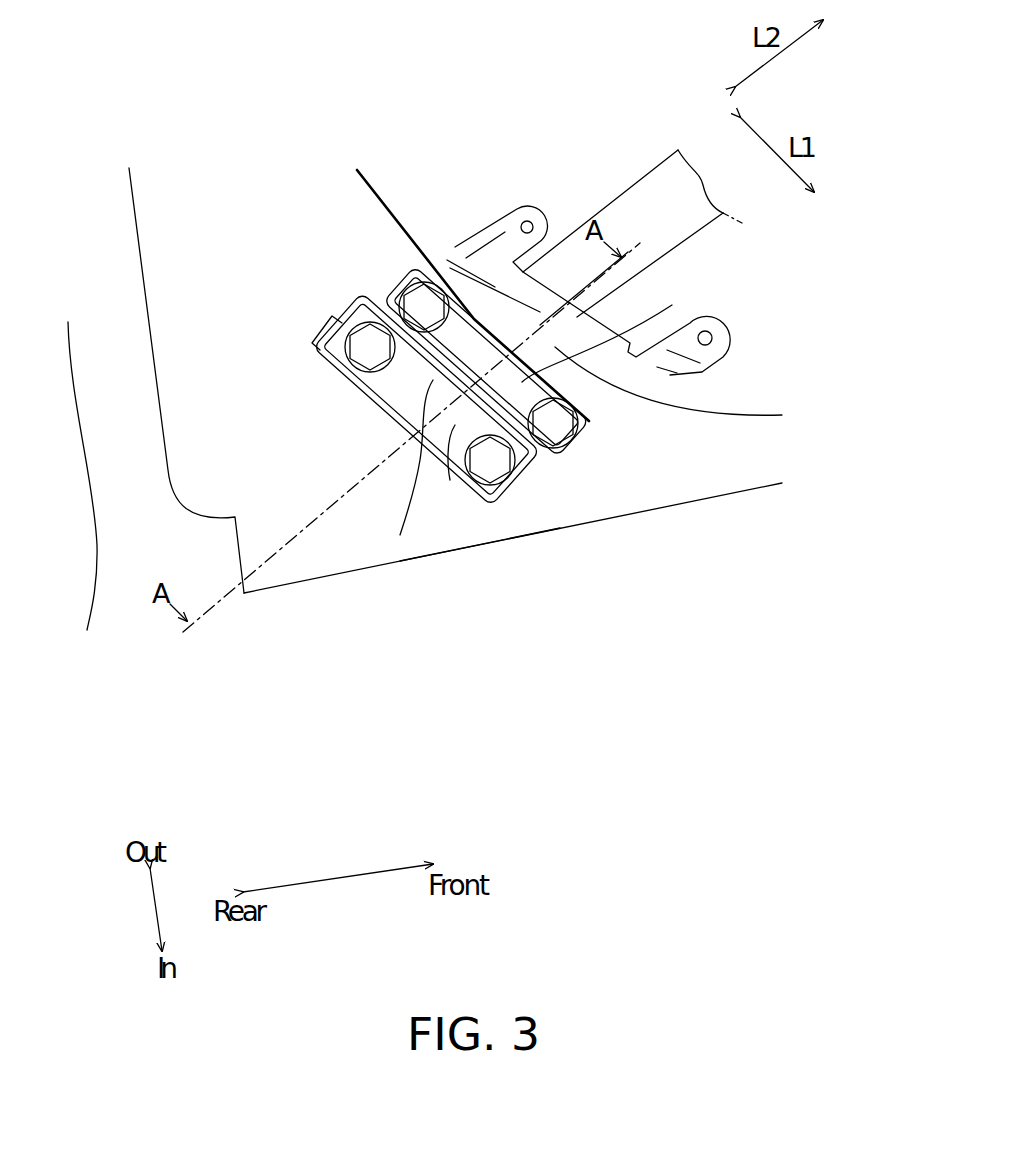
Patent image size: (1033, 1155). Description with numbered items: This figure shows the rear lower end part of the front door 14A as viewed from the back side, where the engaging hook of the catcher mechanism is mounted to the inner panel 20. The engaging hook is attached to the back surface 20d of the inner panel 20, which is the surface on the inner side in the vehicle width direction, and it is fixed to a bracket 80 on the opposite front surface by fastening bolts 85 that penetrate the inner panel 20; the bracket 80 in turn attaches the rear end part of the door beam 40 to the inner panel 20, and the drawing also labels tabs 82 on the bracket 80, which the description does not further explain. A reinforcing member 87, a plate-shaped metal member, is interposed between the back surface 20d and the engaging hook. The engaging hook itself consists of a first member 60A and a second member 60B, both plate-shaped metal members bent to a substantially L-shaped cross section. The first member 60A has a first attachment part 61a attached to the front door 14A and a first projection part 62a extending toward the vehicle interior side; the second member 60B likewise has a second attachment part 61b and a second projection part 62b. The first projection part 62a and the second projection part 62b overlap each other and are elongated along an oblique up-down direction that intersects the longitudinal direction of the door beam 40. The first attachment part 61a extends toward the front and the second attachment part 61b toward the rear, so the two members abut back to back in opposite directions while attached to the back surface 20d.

The front door 14A is at (273, 665).
The inner panel 20 is at (692, 462).
The back surface 20d is at (605, 492).
The door beam 40 is at (622, 188).
The first member 60A is at (400, 290).
The second member 60B is at (345, 322).
The first attachment part 61a is at (627, 345).
The second attachment part 61b is at (450, 480).
The first projection part 62a is at (527, 390).
The second projection part 62b is at (410, 537).
The bracket 80 is at (515, 208).
The mounting tab 82 is at (482, 237).
The bolts 85 is at (430, 317).
The reinforcing member 87 is at (330, 345).